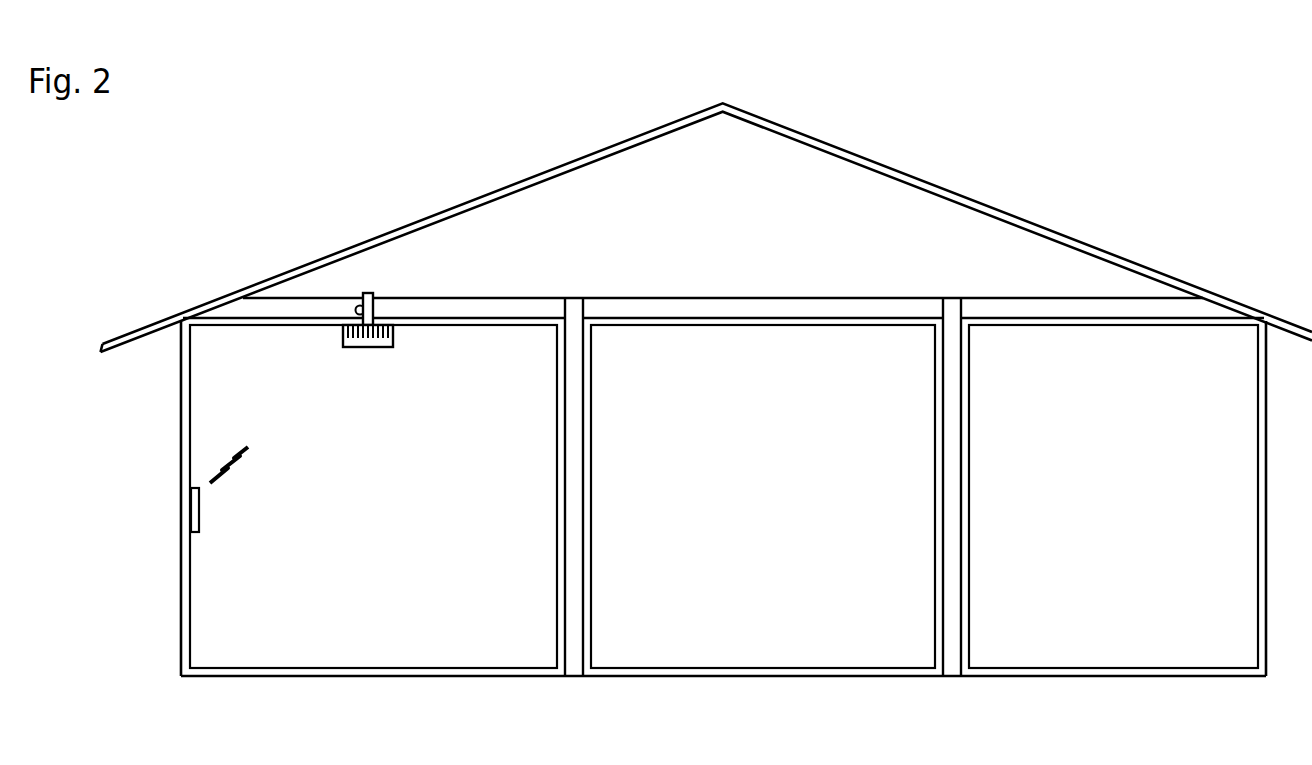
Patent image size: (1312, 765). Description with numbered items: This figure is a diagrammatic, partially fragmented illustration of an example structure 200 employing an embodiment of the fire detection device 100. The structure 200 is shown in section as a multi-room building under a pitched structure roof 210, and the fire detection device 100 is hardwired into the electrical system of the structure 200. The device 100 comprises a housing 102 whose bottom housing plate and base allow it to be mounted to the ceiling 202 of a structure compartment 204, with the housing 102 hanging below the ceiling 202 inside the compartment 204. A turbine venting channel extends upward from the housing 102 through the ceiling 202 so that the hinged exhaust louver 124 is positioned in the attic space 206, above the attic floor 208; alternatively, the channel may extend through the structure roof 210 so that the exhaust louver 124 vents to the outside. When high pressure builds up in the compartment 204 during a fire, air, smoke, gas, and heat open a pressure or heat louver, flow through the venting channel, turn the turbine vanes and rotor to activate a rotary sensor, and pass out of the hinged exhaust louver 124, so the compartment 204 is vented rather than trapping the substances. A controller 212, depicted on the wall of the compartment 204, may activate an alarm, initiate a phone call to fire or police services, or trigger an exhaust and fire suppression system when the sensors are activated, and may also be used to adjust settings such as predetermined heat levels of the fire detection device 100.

The fire detection device 100 is at (320, 362).
The housing 102 is at (342, 332).
The hinged exhaust louver 124 is at (363, 295).
The structure 200 is at (118, 218).
The ceiling 202 is at (401, 320).
The structure compartment 204 is at (393, 548).
The attic space 206 is at (370, 273).
The attic floor 208 is at (423, 298).
The structure roof 210 is at (508, 185).
The controller 212 is at (197, 507).